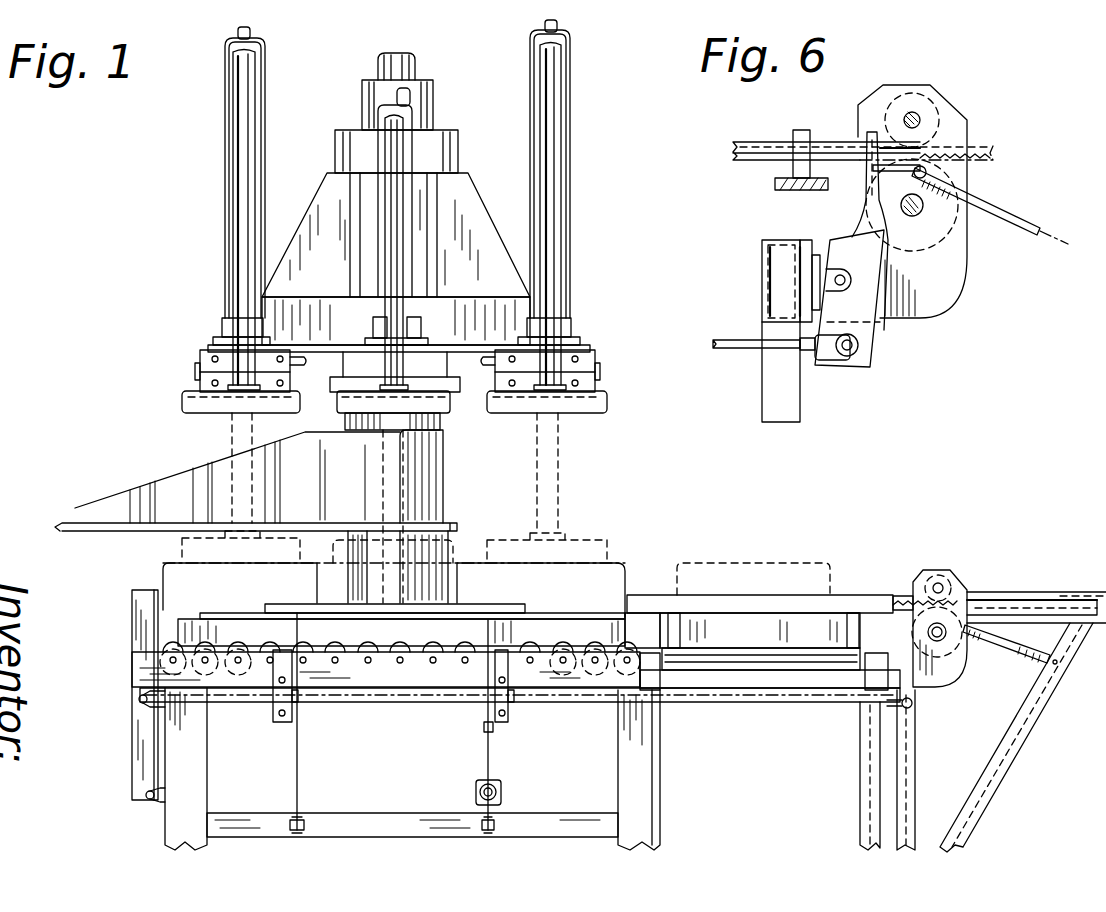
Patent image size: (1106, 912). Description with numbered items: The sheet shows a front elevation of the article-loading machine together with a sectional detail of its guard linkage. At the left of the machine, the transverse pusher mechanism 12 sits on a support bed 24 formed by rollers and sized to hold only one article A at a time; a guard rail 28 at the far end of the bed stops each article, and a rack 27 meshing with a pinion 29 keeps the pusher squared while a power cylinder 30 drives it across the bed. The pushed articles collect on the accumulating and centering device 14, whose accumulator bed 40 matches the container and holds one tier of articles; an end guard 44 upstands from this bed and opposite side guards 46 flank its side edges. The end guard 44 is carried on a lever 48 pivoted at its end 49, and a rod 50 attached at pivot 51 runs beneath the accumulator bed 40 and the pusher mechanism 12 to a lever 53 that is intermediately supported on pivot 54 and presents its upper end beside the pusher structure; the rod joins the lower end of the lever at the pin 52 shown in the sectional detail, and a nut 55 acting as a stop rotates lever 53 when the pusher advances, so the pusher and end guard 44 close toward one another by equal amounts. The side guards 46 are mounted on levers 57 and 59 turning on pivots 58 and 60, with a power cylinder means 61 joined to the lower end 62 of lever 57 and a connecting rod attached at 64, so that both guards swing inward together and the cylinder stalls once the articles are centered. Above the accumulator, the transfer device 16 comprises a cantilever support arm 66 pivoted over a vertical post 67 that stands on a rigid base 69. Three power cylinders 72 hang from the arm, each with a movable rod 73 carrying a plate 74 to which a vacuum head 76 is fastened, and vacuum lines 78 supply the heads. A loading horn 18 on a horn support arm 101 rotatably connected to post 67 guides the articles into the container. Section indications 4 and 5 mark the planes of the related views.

In FIG. 1, the transverse pusher mechanism 12 is at (936, 545).
In FIG. 6, the transverse pusher mechanism 12 is at (976, 95).
In FIG. 1, the accumulating and centering device 14 is at (417, 720).
In FIG. 1, the transfer device 16 is at (483, 188).
In FIG. 1, the loading horn 18 is at (172, 470).
In FIG. 1, the support bed 24 is at (742, 660).
In FIG. 1, the rack 27 is at (893, 600).
In FIG. 6, the rack 27 is at (743, 142).
In FIG. 1, the guard rail 28 is at (800, 590).
In FIG. 1, the pinion 29 is at (958, 645).
In FIG. 6, the pinion 29 is at (975, 240).
In FIG. 1, the power cylinder 30 is at (1060, 595).
In FIG. 1, the accumulator bed 40 is at (548, 655).
In FIG. 1, the end guard 44 is at (160, 598).
In FIG. 1, the side guards 46 is at (470, 598).
In FIG. 1, the lever 48 is at (132, 748).
In FIG. 1, the end 49 is at (148, 800).
In FIG. 1, the rod 50 is at (258, 702).
In FIG. 1, the pivot 51 is at (138, 699).
In FIG. 1, the pin 52 is at (897, 710).
In FIG. 6, the pin 52 is at (845, 356).
In FIG. 1, the lever 53 is at (908, 712).
In FIG. 6, the lever 53 is at (870, 355).
In FIG. 6, the pivot 54 is at (838, 290).
In FIG. 6, the nut 55 is at (875, 128).
In FIG. 1, the lever 57 is at (492, 760).
In FIG. 1, the pivot 58 is at (460, 705).
In FIG. 1, the lever 59 is at (300, 790).
In FIG. 1, the pivot 60 is at (290, 822).
In FIG. 1, the power cylinder means 61 is at (500, 792).
In FIG. 1, the lower end 62 is at (476, 792).
In FIG. 1, the connection 64 is at (495, 728).
In FIG. 1, the cantilever support arm 66 is at (320, 210).
In FIG. 1, the vertical post 67 is at (355, 580).
In FIG. 1, the base 69 is at (570, 612).
In FIG. 1, the power cylinders 72 is at (224, 168).
In FIG. 1, the movable rod 73 is at (252, 34).
In FIG. 1, the plate 74 is at (200, 354).
In FIG. 1, the vacuum head 76 is at (450, 410).
In FIG. 1, the vacuum lines 78 is at (390, 108).
In FIG. 1, the horn support arm 101 is at (112, 510).
In FIG. 1, the section line 5 is at (525, 550).
In FIG. 1, the section line 4 is at (990, 580).
In FIG. 1, the article A is at (625, 575).